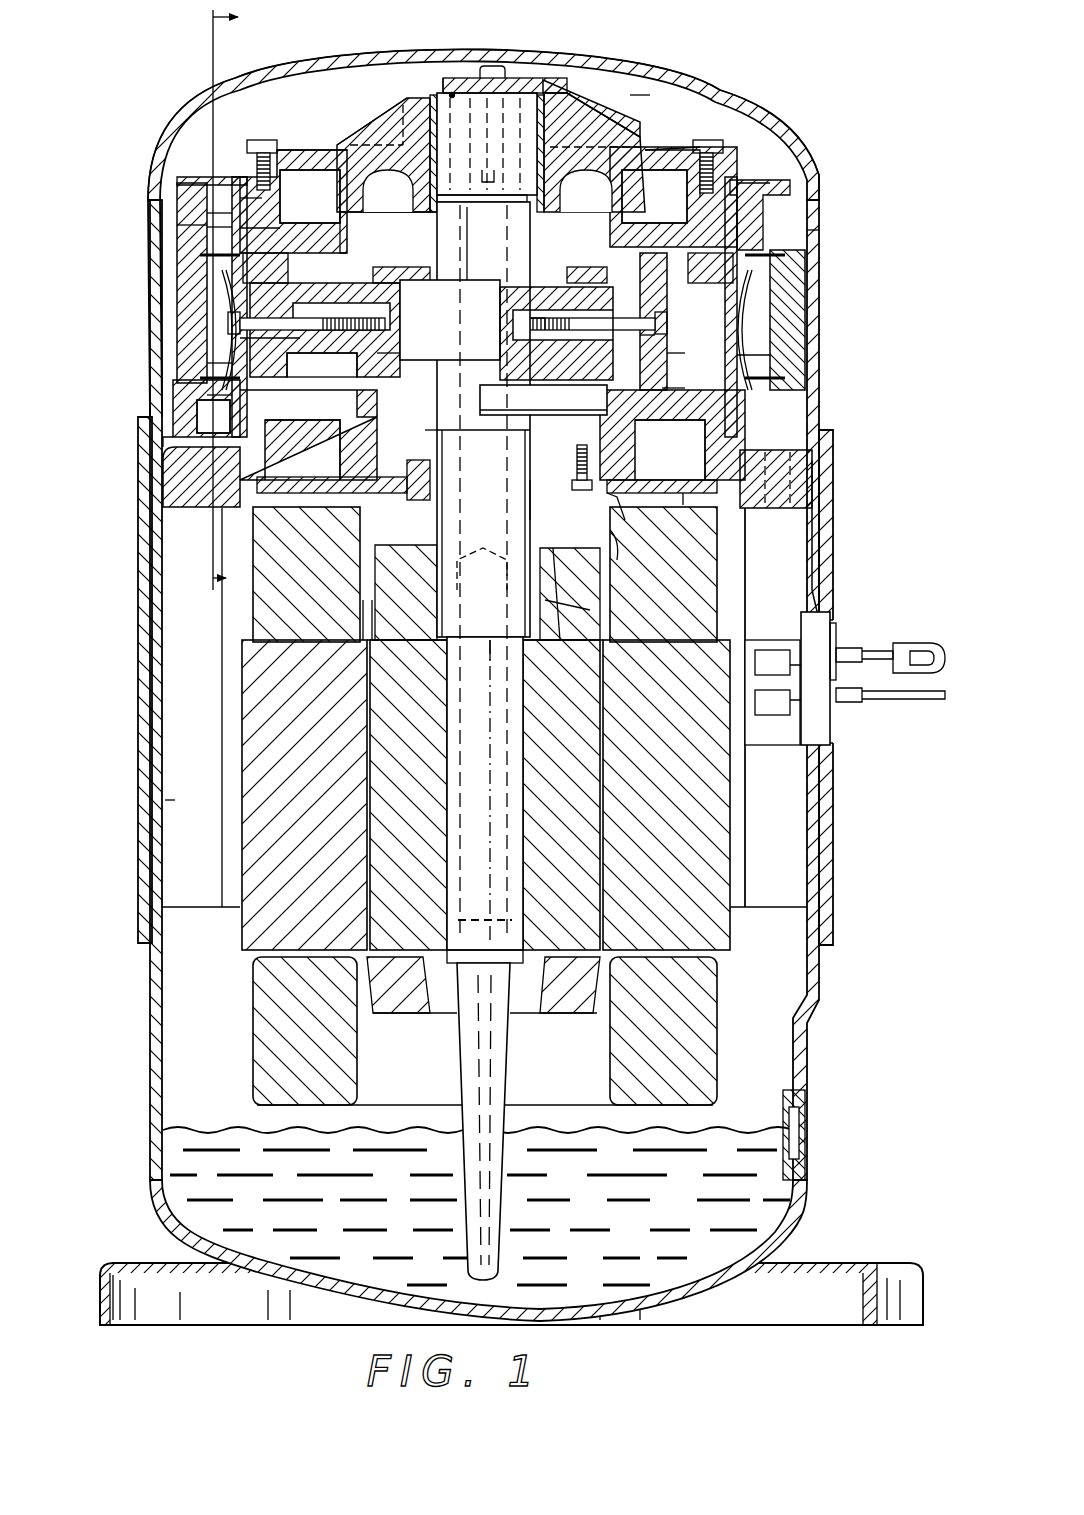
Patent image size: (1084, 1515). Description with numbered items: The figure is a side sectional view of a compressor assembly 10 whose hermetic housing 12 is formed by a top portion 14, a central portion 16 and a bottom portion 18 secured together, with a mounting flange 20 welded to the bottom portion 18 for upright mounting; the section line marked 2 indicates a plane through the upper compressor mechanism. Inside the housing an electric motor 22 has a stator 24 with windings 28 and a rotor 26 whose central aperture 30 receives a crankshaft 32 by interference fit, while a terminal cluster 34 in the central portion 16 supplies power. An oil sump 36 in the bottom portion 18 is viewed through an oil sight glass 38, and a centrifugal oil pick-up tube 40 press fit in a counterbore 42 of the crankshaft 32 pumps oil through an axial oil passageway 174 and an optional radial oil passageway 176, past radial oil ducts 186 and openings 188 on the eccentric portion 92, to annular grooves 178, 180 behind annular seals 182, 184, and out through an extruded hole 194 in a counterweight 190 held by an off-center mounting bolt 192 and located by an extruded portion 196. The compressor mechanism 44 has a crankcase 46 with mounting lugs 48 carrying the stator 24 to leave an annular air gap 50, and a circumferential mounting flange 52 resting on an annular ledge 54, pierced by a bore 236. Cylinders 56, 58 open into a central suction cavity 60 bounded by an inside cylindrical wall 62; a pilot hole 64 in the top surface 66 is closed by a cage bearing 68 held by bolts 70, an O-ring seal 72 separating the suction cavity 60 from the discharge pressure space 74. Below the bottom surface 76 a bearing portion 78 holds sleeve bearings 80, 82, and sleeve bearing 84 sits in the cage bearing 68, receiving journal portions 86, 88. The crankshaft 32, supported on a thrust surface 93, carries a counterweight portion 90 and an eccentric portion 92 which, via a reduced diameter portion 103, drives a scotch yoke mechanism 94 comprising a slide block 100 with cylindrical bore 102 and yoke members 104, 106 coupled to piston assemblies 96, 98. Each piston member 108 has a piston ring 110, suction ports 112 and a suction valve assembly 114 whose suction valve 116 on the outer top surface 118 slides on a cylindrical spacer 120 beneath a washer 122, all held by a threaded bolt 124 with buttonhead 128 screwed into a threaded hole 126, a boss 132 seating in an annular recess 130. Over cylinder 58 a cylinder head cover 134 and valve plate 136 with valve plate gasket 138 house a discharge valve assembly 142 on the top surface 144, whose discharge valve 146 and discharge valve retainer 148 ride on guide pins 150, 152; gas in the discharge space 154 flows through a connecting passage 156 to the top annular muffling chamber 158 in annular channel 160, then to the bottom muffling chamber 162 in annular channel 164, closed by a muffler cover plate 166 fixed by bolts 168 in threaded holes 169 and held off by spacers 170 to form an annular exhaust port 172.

The compressor assembly 10 is at (812, 110).
The housing 12 is at (822, 345).
The top portion 14 is at (815, 232).
The central portion 16 is at (823, 803).
The bottom portion 18 is at (817, 987).
The mounting flange 20 is at (833, 1273).
The electric motor 22 is at (247, 558).
The stator 24 is at (257, 690).
The rotor 26 is at (456, 592).
The windings 28 is at (270, 602).
The central aperture 30 is at (450, 770).
The crankshaft 32 is at (480, 807).
The terminal cluster 34 is at (833, 633).
The oil sump 36 is at (478, 1206).
The oil sight glass 38 is at (807, 1153).
The centrifugal oil pick-up tube 40 is at (463, 1160).
The counterbore 42 is at (473, 933).
The compressor mechanism 44 is at (360, 110).
The crankcase 46 is at (343, 227).
The mounting lugs 48 is at (745, 570).
The annular air gap 50 is at (610, 830).
The circumferential mounting flange 52 is at (828, 470).
The annular ledge 54 is at (830, 520).
The cylinder 56 is at (680, 257).
The cylinder 58 is at (300, 257).
The central suction cavity 60 is at (363, 395).
The inside cylindrical wall 62 is at (582, 222).
The pilot hole 64 is at (372, 185).
The top surface 66 is at (340, 148).
The cage bearing 68 is at (680, 158).
The bolts 70 is at (263, 142).
The O-ring seal 72 is at (673, 153).
The discharge pressure space 74 is at (655, 108).
The bottom surface 76 is at (363, 520).
The bearing portion 78 is at (607, 552).
The sleeve bearing 80 is at (483, 419).
The sleeve bearing 82 is at (540, 587).
The sleeve bearing 84 is at (512, 78).
The journal portion 86 is at (565, 593).
The journal portion 88 is at (552, 185).
The counterweight portion 90 is at (610, 405).
The eccentric portion 92 is at (430, 287).
The thrust surface 93 is at (430, 440).
The scotch yoke mechanism 94 is at (590, 247).
The piston assembly 96 is at (672, 380).
The piston assembly 98 is at (263, 298).
The slide block 100 is at (537, 277).
The cylindrical bore 102 is at (482, 403).
The reduced diameter portion 103 is at (487, 248).
The yoke member 104 is at (373, 247).
The yoke member 106 is at (360, 377).
The piston member 108 is at (757, 273).
The annular piston ring 110 is at (630, 250).
The suction ports 112 is at (665, 355).
The suction valve assembly 114 is at (677, 295).
The suction valve 116 is at (667, 360).
The outer top surface 118 is at (662, 390).
The cylindrical spacer 120 is at (645, 340).
The washer 122 is at (662, 330).
The threaded bolt 124 is at (275, 320).
The threaded hole 126 is at (530, 330).
The buttonhead 128 is at (243, 318).
The annular recess 130 is at (363, 290).
The boss 132 is at (270, 338).
The cylinder head cover 134 is at (180, 430).
The valve plate 136 is at (217, 213).
The valve plate gasket 138 is at (250, 198).
The discharge valve assembly 142 is at (198, 302).
The top surface 144 is at (223, 417).
The discharge valve 146 is at (217, 363).
The discharge valve retainer 148 is at (213, 387).
The guide pin 150 is at (205, 265).
The guide pin 152 is at (215, 395).
The discharge space 154 is at (210, 225).
The connecting passage 156 is at (260, 228).
The top annular muffling chamber 158 is at (310, 196).
The annular channel 160 is at (210, 227).
The bottom muffling chamber 162 is at (302, 450).
The annular channel 164 is at (683, 430).
The muffler cover plate 166 is at (683, 497).
The bolts 168 is at (617, 533).
The threaded holes 169 is at (577, 462).
The spacers 170 is at (617, 497).
The annular exhaust port 172 is at (337, 560).
The axial oil passageway 174 is at (512, 770).
The radial oil passageway 176 is at (447, 647).
The annular groove 178 is at (507, 197).
The annular groove 180 is at (527, 500).
The annular seal 182 is at (390, 125).
The annular seal 184 is at (505, 437).
The radially extending oil ducts 186 is at (425, 430).
The openings 188 is at (382, 357).
The counterweight 190 is at (640, 97).
The off-center mounting bolt 192 is at (490, 66).
The extruded hole 194 is at (458, 78).
The extruded portion 196 is at (452, 95).
The bore 236 is at (827, 487).
The section line 2- 2 is at (235, 298).